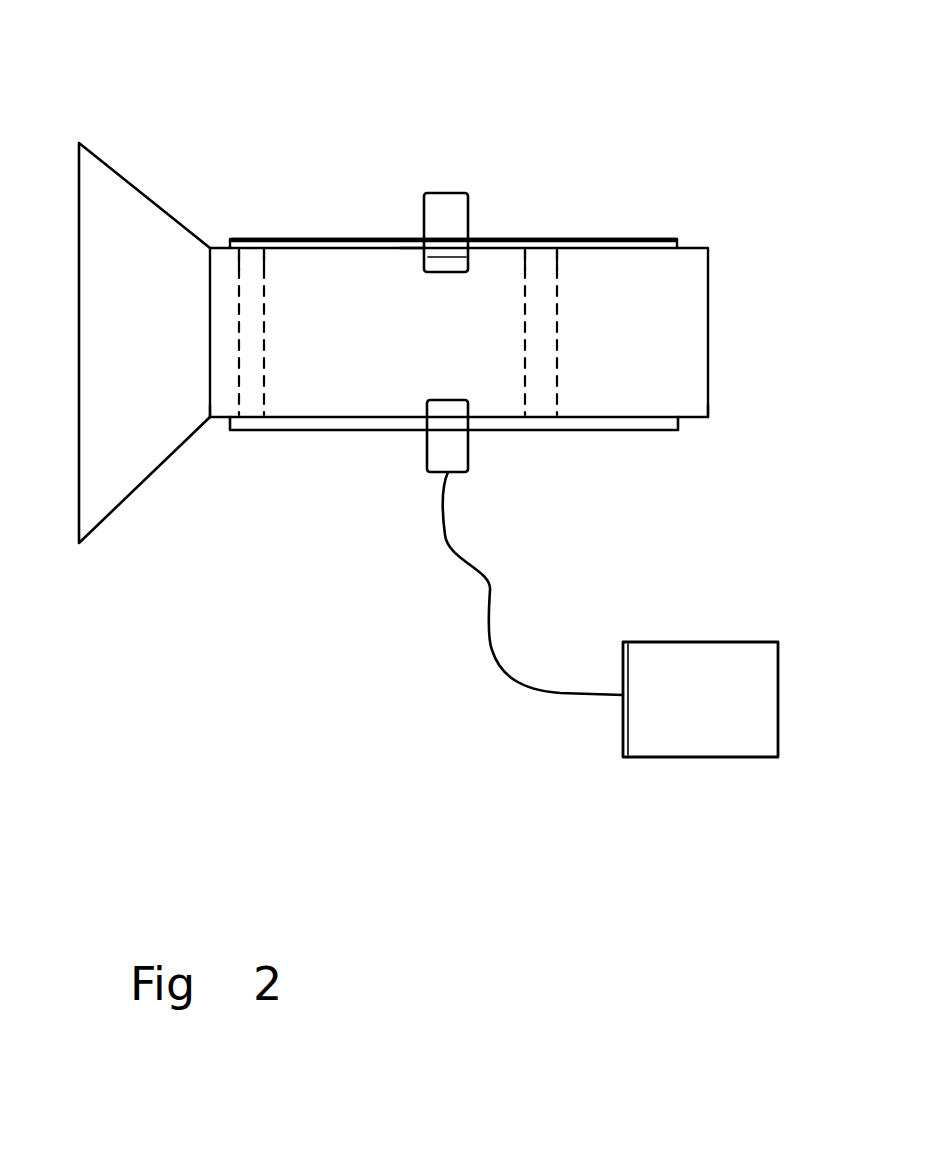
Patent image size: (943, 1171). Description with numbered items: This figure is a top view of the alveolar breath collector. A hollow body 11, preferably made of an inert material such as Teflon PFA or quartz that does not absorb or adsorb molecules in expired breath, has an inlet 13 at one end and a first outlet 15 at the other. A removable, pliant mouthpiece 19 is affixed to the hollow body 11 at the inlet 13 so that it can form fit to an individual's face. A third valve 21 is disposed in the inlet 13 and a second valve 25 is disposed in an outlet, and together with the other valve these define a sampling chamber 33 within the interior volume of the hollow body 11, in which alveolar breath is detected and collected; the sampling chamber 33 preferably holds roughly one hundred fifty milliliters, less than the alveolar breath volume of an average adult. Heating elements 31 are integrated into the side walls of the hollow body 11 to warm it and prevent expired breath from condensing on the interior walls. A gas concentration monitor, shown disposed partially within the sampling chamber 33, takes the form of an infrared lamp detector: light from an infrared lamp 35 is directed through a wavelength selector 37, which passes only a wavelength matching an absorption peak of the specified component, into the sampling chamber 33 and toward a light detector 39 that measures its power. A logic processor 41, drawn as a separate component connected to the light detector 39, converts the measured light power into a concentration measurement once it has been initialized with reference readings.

The hollow body 11 is at (300, 418).
The inlet 13 is at (225, 403).
The first outlet 15 is at (657, 405).
The mouthpiece 19 is at (128, 178).
The third valve 21 is at (545, 263).
The second valve 25 is at (250, 265).
The heating elements 31 is at (647, 237).
The sampling chamber 33 is at (413, 337).
The infrared lamp 35 is at (455, 215).
The wavelength selector 37 is at (376, 217).
The light detector 39 is at (437, 447).
The logic processor 41 is at (742, 758).